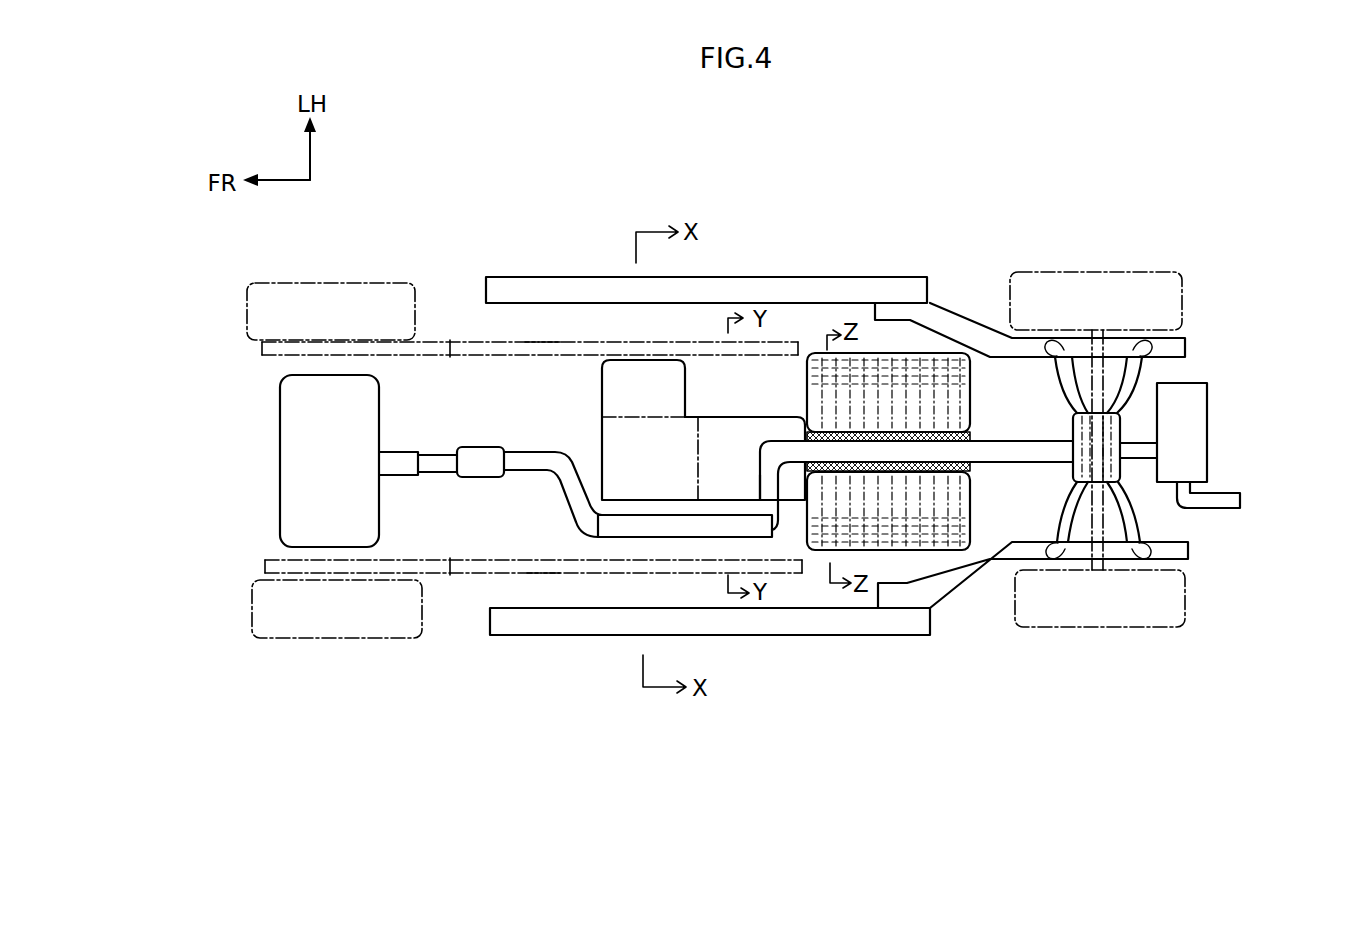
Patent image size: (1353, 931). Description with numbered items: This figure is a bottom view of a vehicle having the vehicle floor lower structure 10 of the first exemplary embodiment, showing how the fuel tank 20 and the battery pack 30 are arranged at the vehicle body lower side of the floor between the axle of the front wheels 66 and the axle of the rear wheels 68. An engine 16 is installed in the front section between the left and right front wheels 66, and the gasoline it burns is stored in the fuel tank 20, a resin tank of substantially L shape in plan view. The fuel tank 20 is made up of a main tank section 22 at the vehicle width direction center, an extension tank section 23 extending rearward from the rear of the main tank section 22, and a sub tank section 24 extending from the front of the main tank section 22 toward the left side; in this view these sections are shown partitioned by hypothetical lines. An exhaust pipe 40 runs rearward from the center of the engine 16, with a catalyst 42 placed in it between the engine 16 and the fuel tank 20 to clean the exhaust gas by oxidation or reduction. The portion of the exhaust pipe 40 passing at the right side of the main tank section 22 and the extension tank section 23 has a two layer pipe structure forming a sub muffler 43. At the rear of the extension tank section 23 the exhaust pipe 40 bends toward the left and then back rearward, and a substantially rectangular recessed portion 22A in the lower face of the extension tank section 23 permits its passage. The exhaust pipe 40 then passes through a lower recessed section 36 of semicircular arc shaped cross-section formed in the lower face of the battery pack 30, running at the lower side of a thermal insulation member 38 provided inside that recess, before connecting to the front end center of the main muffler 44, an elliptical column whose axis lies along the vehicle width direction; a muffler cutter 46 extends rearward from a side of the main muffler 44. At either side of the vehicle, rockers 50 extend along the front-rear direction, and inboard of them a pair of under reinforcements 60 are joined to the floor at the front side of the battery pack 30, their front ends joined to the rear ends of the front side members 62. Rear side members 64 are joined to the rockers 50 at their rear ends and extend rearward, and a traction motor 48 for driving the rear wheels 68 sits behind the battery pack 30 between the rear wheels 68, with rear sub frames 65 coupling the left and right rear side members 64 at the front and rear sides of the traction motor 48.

The vehicle floor lower structure 10 is at (806, 322).
The engine 16 is at (290, 465).
The fuel tank 20 is at (652, 355).
The main tank section 22 is at (615, 452).
The recessed portion 22A is at (793, 540).
The extension tank section 23 is at (735, 420).
The sub tank section 24 is at (657, 378).
The battery pack 30 is at (977, 416).
The lower recessed section 36 is at (930, 437).
The thermal insulation member 38 is at (968, 468).
The exhaust pipe 40 is at (565, 503).
The catalyst 42 is at (478, 450).
The sub muffler 43 is at (625, 537).
The main muffler 44 is at (1190, 437).
The muffler cutter 46 is at (1240, 500).
The traction motor 48 is at (1125, 410).
The rockers 50 is at (793, 277).
The under reinforcements 60 is at (525, 342).
The front side members 62 is at (262, 350).
The rear side members 64 is at (1188, 348).
The rear sub frames 65 is at (1060, 518).
The front wheels 66 is at (302, 282).
The rear wheels 68 is at (1095, 272).